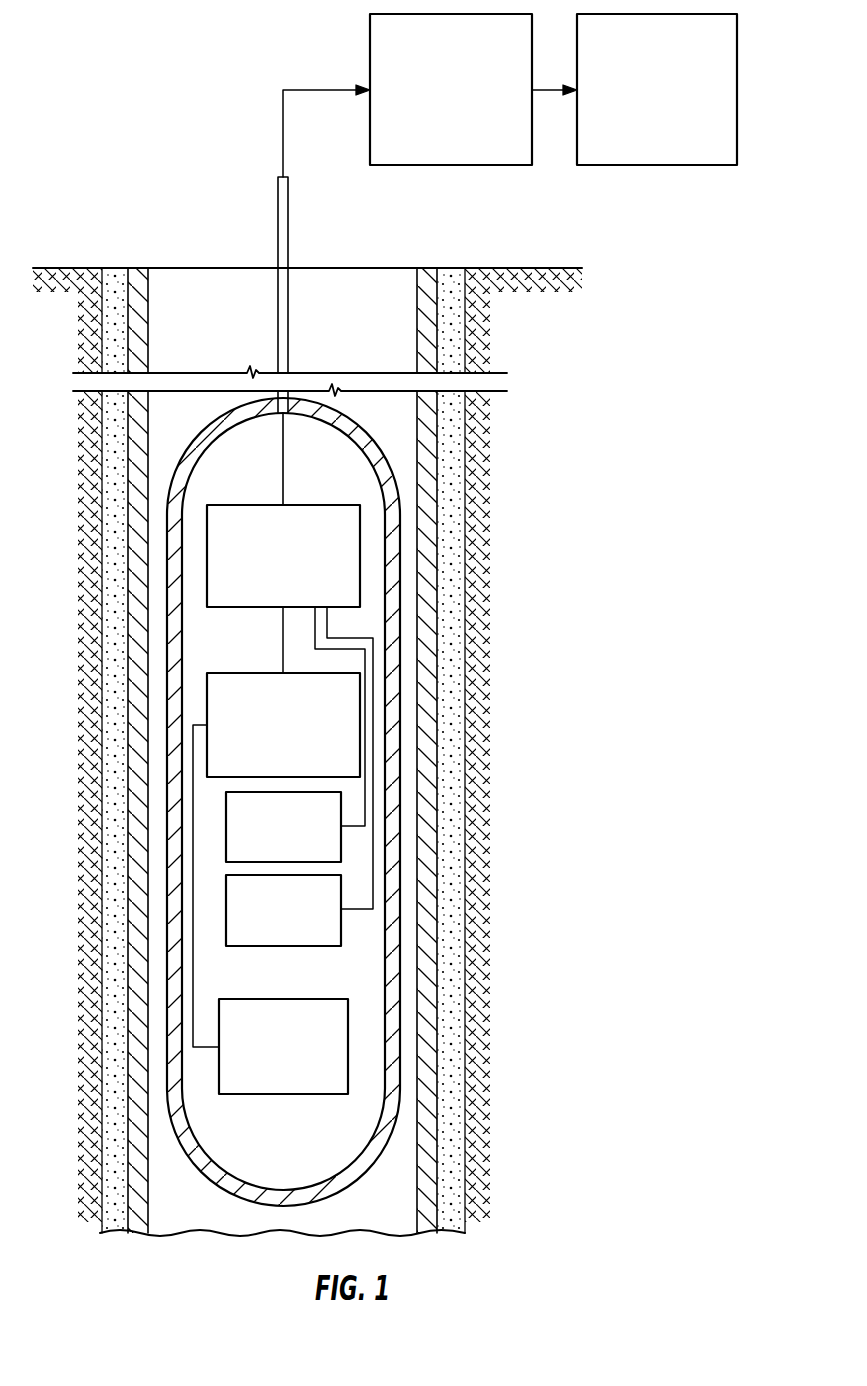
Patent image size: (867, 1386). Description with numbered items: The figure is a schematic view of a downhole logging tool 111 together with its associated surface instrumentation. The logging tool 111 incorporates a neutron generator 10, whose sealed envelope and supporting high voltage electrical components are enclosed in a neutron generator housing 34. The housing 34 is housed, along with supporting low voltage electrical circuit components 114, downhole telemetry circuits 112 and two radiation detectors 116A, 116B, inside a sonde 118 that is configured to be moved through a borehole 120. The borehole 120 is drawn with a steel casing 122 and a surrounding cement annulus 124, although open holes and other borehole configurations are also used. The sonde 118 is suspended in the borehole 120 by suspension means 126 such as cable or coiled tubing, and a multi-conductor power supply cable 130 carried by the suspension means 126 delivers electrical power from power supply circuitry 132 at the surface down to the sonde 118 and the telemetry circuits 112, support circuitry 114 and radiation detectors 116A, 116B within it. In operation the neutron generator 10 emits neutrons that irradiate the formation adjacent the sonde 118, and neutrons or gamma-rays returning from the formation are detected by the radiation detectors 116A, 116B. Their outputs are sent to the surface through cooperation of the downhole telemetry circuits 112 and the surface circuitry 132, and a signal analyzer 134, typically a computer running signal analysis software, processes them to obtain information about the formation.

The neutron generator 10 is at (349, 1019).
The neutron generator housing 34 is at (267, 1095).
The logging tool 111 is at (334, 802).
The downhole telemetry circuits 112 is at (362, 550).
The low voltage electrical circuit components 114 is at (206, 693).
The radiation detector 116A is at (226, 815).
The radiation detector 116B is at (226, 895).
The sonde 118 is at (183, 453).
The borehole 120 is at (180, 246).
The steel casing 122 is at (138, 485).
The cement annulus 124 is at (115, 578).
The suspension means 126 is at (277, 190).
The multi-conductor power supply cable 130 is at (293, 87).
The power supply circuitry 132 is at (465, 165).
The signal analyzer 134 is at (688, 165).